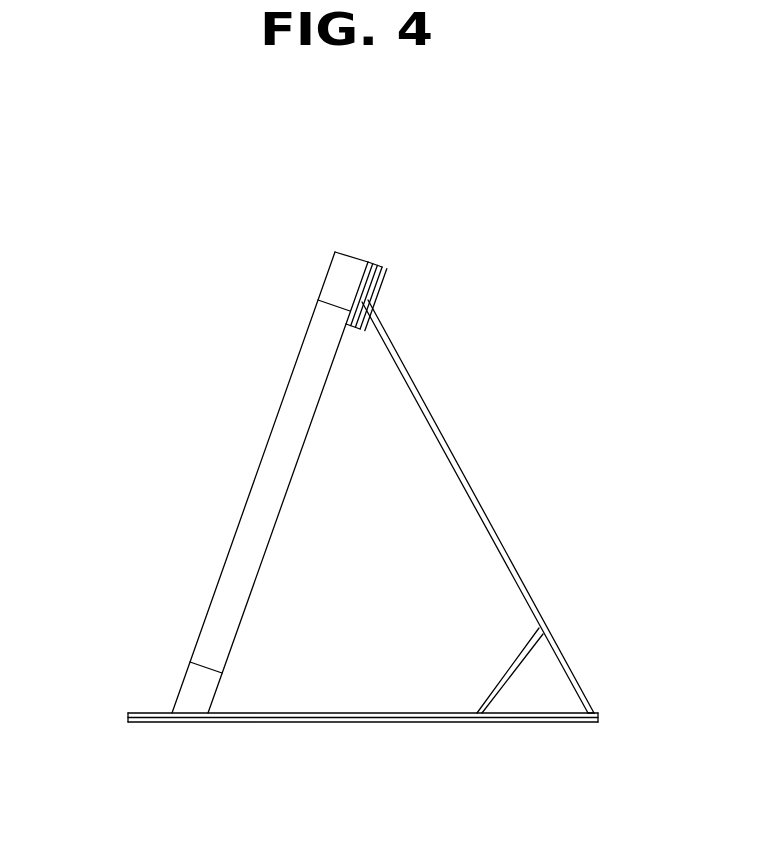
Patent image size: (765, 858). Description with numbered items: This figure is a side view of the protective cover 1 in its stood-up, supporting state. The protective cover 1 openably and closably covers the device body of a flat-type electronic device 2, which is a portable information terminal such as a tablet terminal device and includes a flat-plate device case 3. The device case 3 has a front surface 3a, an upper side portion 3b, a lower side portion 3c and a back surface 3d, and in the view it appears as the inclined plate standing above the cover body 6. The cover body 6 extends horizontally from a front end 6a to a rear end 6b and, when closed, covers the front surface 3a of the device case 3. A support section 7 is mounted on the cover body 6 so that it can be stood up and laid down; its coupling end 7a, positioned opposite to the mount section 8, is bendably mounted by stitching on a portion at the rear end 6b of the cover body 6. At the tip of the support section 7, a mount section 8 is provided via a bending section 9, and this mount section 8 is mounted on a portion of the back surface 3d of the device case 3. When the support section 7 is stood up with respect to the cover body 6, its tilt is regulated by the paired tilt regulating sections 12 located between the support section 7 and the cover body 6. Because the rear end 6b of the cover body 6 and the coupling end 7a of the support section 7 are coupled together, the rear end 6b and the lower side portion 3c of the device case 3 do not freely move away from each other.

The protective cover 1 is at (550, 577).
The electronic device 2 is at (277, 403).
The device case 3 is at (265, 493).
The front surface 3a is at (217, 583).
The upper side portion 3b is at (347, 251).
The lower side portion 3c is at (173, 710).
The back surface 3d is at (260, 573).
The cover body 6 is at (390, 723).
The front end 6a is at (127, 722).
The rear end 6b is at (598, 721).
The support section 7 is at (458, 453).
The coupling end 7a is at (592, 709).
The mount section 8 is at (353, 319).
The bending section 9 is at (384, 275).
The tilt regulating sections 12 is at (510, 683).